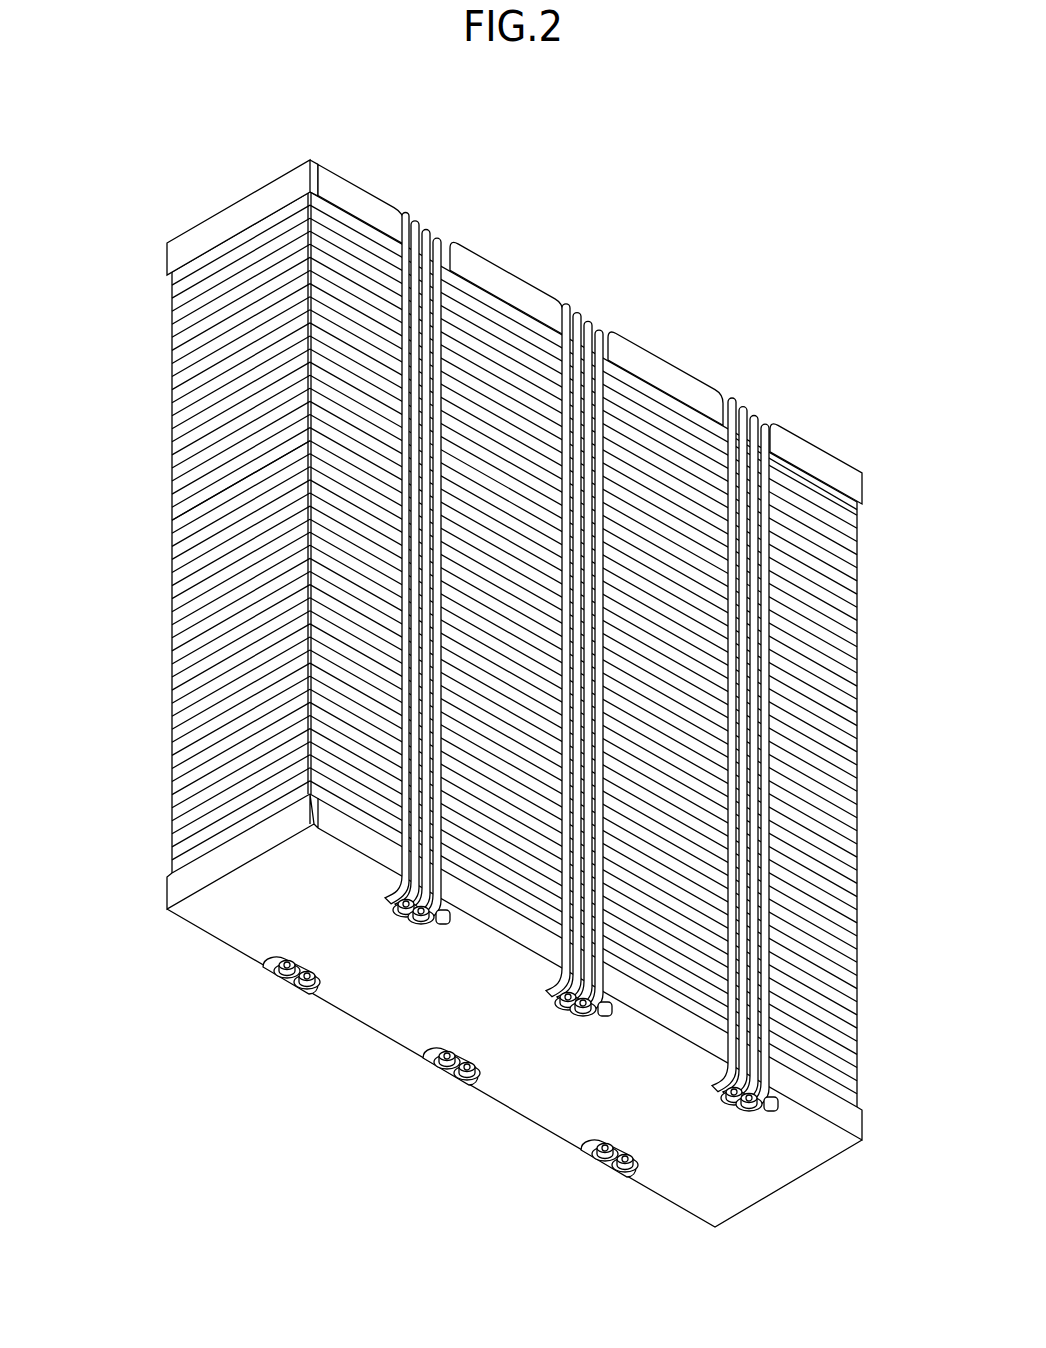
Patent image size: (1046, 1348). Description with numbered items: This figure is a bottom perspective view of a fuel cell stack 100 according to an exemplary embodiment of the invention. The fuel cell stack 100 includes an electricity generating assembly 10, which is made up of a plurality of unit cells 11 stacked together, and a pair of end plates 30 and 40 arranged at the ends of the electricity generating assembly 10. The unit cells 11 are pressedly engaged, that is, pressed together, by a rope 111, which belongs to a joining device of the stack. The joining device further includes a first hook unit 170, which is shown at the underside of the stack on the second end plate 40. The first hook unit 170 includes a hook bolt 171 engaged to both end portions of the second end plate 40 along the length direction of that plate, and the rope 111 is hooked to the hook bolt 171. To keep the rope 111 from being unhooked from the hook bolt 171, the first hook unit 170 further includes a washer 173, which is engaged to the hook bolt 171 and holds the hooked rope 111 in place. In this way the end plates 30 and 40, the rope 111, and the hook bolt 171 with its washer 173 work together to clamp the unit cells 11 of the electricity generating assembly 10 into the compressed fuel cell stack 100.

The fuel cell stack 100 is at (556, 156).
The electricity generating assembly 10 is at (160, 606).
The unit cell 11 is at (195, 523).
The rope 111 is at (777, 581).
The end plate 30 is at (830, 462).
The second end plate 40 is at (205, 873).
The first hook unit 170 is at (280, 987).
The hook bolt 171 is at (447, 1082).
The washer 173 is at (440, 1062).